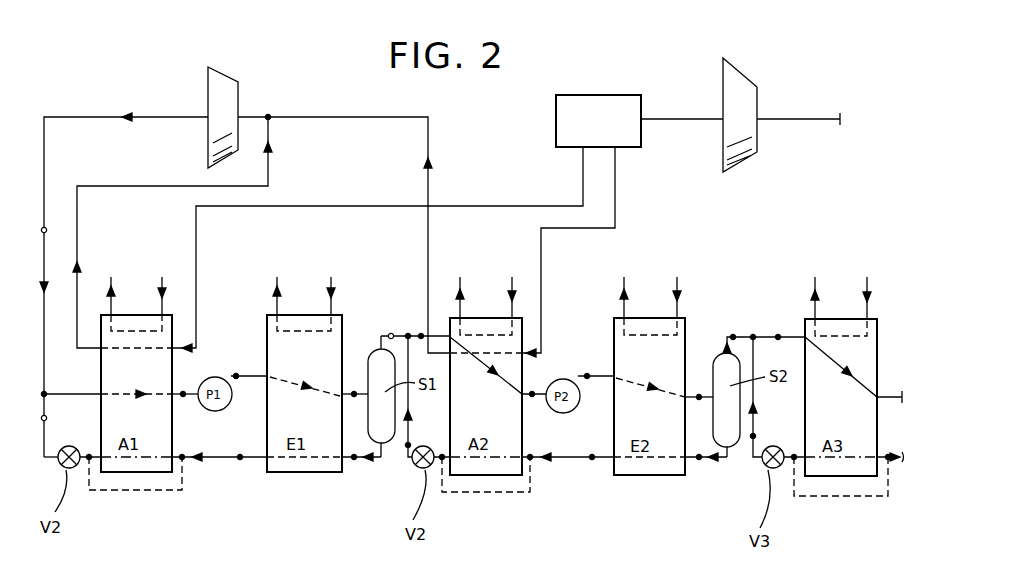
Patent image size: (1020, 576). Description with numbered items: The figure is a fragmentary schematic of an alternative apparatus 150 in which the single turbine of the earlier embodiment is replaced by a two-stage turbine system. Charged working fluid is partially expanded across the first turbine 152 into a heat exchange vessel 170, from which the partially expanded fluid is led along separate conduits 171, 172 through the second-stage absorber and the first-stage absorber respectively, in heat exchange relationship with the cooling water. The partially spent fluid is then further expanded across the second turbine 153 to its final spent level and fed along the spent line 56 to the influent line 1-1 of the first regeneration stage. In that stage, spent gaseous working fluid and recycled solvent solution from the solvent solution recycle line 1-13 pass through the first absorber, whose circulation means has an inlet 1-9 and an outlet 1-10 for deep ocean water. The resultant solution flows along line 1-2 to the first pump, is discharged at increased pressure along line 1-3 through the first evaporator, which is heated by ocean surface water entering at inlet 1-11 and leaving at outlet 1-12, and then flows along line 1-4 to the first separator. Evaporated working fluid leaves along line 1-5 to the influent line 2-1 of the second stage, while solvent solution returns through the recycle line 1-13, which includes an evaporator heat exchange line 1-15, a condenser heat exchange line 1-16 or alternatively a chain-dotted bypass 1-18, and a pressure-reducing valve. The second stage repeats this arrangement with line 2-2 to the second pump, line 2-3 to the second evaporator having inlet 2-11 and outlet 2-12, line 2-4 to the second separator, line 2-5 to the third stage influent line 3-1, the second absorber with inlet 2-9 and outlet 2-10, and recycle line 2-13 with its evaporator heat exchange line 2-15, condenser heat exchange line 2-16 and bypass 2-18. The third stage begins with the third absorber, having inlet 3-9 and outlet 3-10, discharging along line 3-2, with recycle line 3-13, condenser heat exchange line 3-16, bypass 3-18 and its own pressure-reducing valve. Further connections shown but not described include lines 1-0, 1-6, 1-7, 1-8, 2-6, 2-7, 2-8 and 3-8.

The spent line 56 is at (75, 117).
The second turbine 153 is at (218, 75).
The first turbine 152 is at (745, 90).
The heat exchange vessel 170 is at (583, 95).
The conduit 171 is at (617, 186).
The conduit 172 is at (453, 208).
The apparatus 150 is at (528, 535).
The conduit 1-0 is at (47, 229).
The influent line 1-1 is at (44, 394).
The line 1-2 is at (183, 394).
The line 1-3 is at (236, 376).
The line 1-4 is at (354, 394).
The line 1-5 is at (391, 333).
The conduit 1-6 is at (354, 460).
The conduit 1-7 is at (240, 460).
The conduit 1-8 is at (44, 418).
The inlet 1-9 is at (162, 277).
The outlet 1-10 is at (111, 277).
The inlet 1-11 is at (331, 277).
The outlet 1-12 is at (277, 277).
The solvent solution recycle line 1-13 is at (213, 460).
The evaporator heat exchange line 1-15 is at (295, 459).
The condenser heat exchange line 1-16 is at (143, 456).
The bypass line 1-18 is at (128, 492).
The influent line 2-1 is at (421, 333).
The line 2-2 is at (532, 394).
The line 2-3 is at (587, 376).
The line 2-4 is at (699, 397).
The line 2-5 is at (733, 337).
The conduit 2-6 is at (699, 460).
The conduit 2-7 is at (592, 460).
The conduit 2-8 is at (408, 445).
The inlet 2-9 is at (512, 277).
The outlet 2-10 is at (460, 277).
The inlet 2-11 is at (677, 277).
The outlet 2-12 is at (624, 277).
The solvent solution recycle line 2-13 is at (553, 460).
The evaporator heat exchange line 2-15 is at (663, 460).
The condenser heat exchange line 2-16 is at (503, 457).
The bypass line 2-18 is at (478, 495).
The influent line 3-1 is at (778, 337).
The line 3-2 is at (885, 397).
The conduit 3-8 is at (753, 436).
The inlet 3-9 is at (867, 277).
The outlet 3-10 is at (815, 277).
The solvent solution recycle line 3-13 is at (892, 462).
The condenser heat exchange line 3-16 is at (860, 457).
The bypass line 3-18 is at (848, 500).